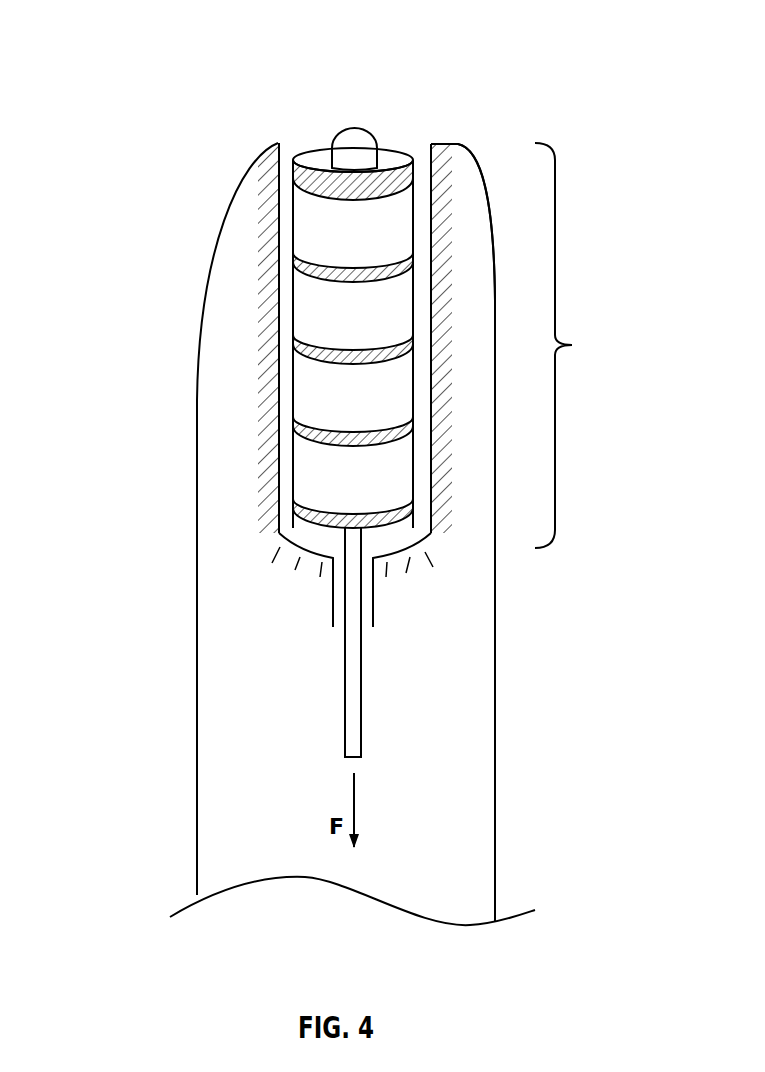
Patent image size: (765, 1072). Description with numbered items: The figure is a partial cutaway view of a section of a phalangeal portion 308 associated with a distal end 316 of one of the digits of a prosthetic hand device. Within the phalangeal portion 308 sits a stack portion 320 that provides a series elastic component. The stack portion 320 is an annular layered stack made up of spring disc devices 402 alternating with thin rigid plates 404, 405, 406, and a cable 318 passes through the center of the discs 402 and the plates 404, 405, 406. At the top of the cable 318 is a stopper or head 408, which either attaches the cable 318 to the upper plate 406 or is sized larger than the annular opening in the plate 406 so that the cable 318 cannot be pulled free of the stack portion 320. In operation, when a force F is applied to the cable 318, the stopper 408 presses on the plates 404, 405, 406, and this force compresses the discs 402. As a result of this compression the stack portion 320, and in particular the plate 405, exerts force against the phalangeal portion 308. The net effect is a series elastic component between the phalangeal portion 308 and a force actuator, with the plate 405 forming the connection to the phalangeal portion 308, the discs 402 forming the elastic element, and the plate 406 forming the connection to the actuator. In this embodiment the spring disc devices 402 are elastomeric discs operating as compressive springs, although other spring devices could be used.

The phalangeal portion 308 is at (195, 716).
The distal end 316 is at (506, 113).
The cable 318 is at (393, 703).
The stack portion 320 is at (575, 345).
The spring disc devices 402 is at (336, 228).
The thin rigid plate 404 is at (304, 447).
The thin rigid plate 405 is at (287, 503).
The upper plate 406 is at (393, 139).
The stopper 408 is at (345, 125).